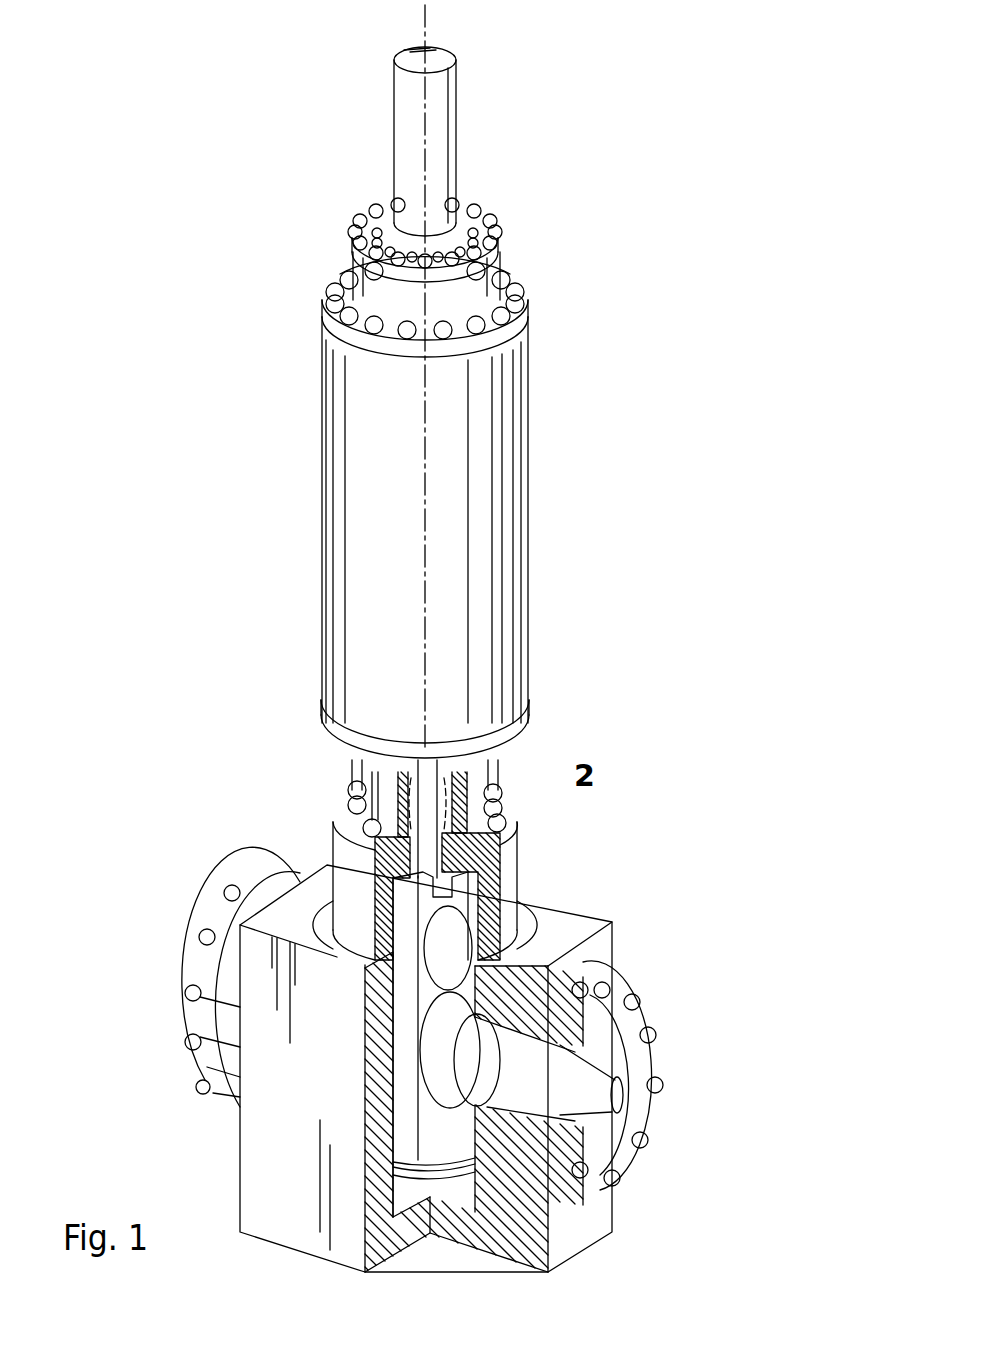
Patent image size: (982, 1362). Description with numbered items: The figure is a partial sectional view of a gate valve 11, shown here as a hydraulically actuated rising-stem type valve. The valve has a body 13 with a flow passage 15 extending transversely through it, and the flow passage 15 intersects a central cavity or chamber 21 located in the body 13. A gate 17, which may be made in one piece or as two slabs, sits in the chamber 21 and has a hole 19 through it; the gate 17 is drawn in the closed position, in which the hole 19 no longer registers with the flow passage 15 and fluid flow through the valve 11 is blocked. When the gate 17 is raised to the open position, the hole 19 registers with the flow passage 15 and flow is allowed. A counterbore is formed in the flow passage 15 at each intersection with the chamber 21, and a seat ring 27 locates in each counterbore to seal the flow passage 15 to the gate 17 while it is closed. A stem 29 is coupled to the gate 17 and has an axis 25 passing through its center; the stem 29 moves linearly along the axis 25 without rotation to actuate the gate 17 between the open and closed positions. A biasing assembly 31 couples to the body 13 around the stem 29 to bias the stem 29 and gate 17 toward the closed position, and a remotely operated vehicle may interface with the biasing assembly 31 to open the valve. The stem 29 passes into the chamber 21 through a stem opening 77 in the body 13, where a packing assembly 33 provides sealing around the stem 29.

The gate valve 11 is at (595, 468).
The body 13 is at (592, 923).
The flow passage 15 is at (550, 1105).
The gate 17 is at (465, 893).
The hole 19 is at (452, 944).
The chamber 21 is at (575, 1264).
The axis 25 is at (425, 27).
The seat ring 27 is at (610, 1180).
The stem 29 is at (395, 800).
The biasing assembly 31 is at (517, 378).
The packing assembly 33 is at (463, 813).
The stem opening 77 is at (432, 850).